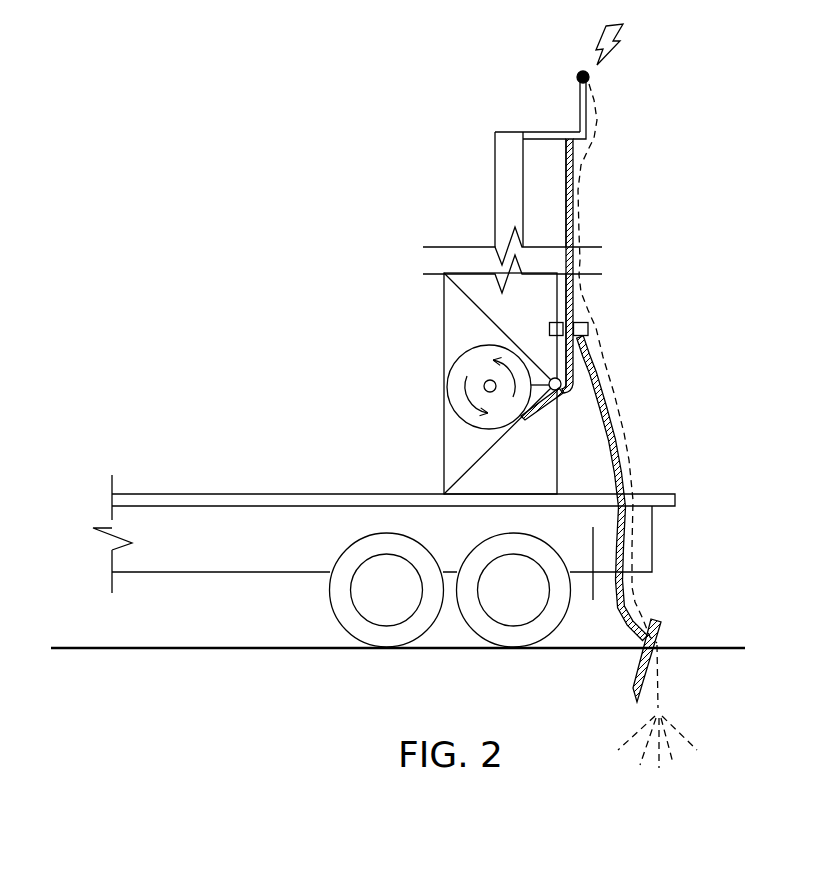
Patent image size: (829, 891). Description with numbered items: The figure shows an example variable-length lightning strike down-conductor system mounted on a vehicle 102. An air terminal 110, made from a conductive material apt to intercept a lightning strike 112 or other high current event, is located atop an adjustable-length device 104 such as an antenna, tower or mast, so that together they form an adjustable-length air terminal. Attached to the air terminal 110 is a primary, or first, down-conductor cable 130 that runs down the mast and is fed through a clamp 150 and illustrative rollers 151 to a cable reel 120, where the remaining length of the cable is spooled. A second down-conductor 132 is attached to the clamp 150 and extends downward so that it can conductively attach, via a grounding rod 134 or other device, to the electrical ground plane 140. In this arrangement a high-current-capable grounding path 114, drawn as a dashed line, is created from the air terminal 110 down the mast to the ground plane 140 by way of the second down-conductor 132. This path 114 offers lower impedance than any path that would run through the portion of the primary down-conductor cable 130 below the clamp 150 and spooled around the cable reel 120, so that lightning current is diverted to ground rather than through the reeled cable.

The vehicle / frame 102 is at (444, 337).
The adjustable-length device 104 is at (494, 154).
The air terminal 110 is at (580, 115).
The lightning strike 112 is at (616, 45).
The grounding path 114 is at (580, 167).
The cable reel 120 is at (461, 381).
The primary down-conductor cable 130 is at (574, 358).
The second down-conductor 132 is at (627, 529).
The grounding rod 134 is at (657, 621).
The electrical ground plane 140 is at (565, 694).
The clamp 150 is at (589, 320).
The rollers 151 is at (562, 392).